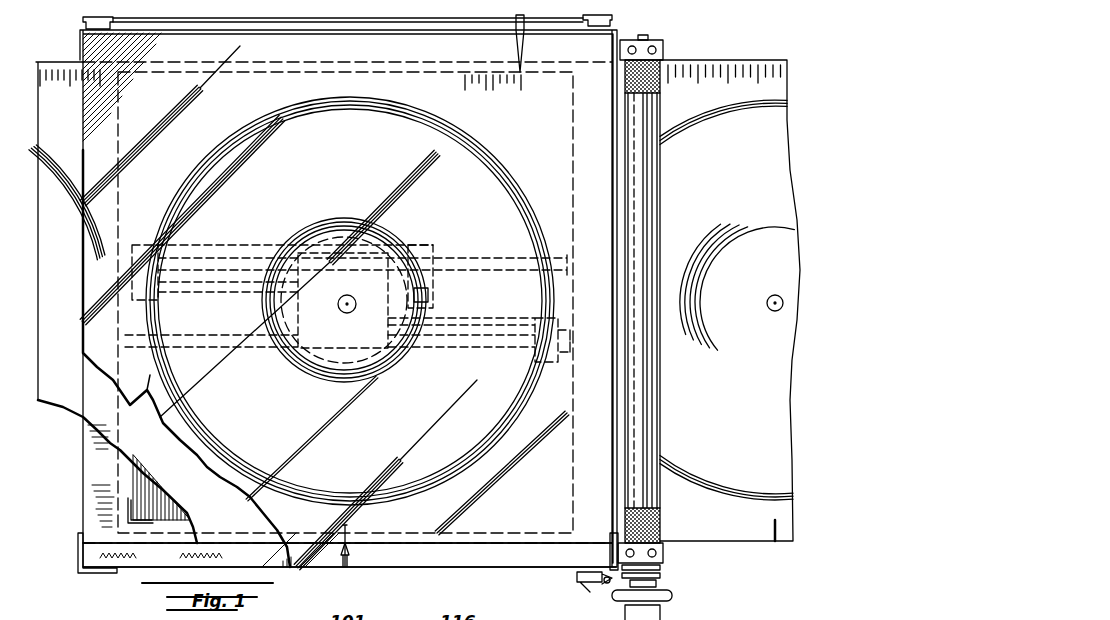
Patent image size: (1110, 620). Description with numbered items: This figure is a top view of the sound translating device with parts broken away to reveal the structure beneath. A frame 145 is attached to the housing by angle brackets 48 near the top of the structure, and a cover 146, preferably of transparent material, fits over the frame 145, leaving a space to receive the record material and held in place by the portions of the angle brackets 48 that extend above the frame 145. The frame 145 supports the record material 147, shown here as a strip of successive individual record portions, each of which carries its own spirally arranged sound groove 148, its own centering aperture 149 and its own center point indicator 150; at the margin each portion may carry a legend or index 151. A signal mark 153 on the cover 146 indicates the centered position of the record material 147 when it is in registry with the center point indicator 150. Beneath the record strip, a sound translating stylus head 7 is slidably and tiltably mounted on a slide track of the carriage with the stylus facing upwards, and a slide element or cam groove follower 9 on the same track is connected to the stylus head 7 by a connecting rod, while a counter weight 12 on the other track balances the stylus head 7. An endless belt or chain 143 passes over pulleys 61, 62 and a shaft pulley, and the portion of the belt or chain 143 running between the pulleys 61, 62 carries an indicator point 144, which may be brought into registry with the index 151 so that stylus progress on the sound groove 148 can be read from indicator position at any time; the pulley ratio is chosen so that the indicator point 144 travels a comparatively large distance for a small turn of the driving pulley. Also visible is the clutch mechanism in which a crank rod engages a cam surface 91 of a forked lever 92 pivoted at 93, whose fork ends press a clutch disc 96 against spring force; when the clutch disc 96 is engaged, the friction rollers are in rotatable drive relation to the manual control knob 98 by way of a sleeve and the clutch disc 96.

The sound translating stylus head 7 is at (152, 257).
The slide element or cam groove follower 9 is at (433, 258).
The counter weight 12 is at (540, 360).
The angle brackets 48 is at (78, 562).
The pulley 61 is at (83, 21).
The pulley 62 is at (614, 18).
The cam surface 91 is at (598, 584).
The forked lever 92 is at (665, 569).
The pivot 93 is at (628, 612).
The clutch disc 96 is at (665, 581).
The manual control knob 98 is at (672, 595).
The belt or chain 143 is at (422, 18).
The indicator point 144 is at (525, 48).
The frame 145 is at (100, 490).
The cover 146 is at (432, 566).
The record material 147 is at (85, 412).
The sound groove 148 is at (178, 197).
The centering aperture 149 is at (347, 300).
The center point indicator 150 is at (350, 530).
The legend or index 151 is at (62, 95).
The signal mark 153 is at (352, 556).